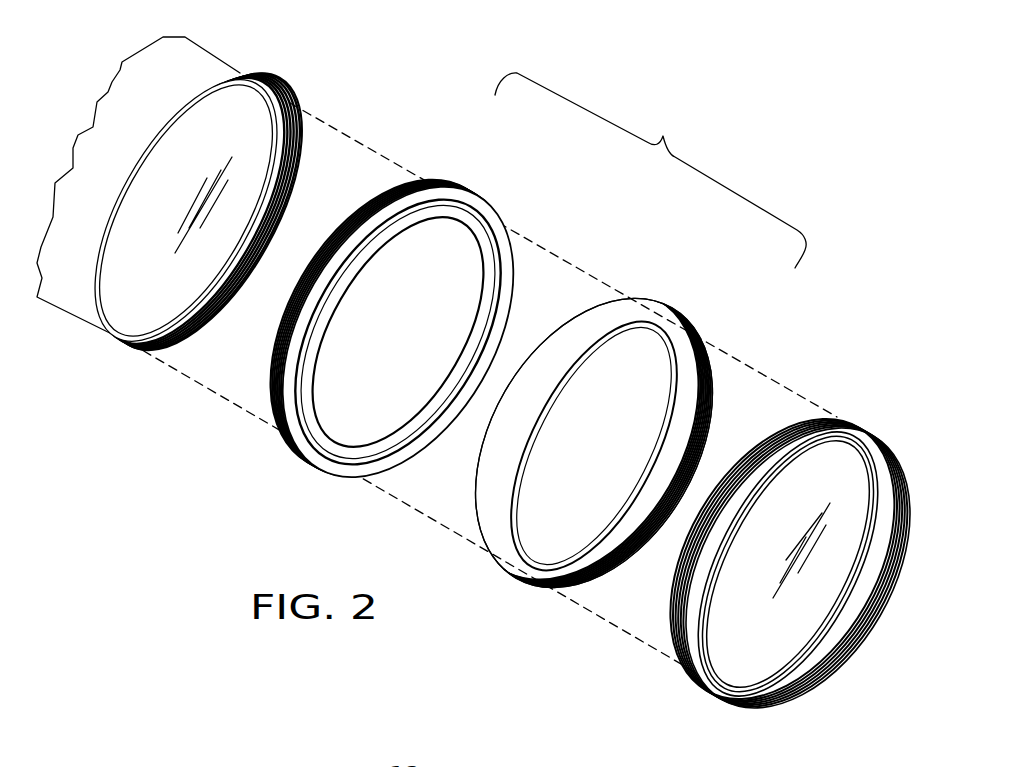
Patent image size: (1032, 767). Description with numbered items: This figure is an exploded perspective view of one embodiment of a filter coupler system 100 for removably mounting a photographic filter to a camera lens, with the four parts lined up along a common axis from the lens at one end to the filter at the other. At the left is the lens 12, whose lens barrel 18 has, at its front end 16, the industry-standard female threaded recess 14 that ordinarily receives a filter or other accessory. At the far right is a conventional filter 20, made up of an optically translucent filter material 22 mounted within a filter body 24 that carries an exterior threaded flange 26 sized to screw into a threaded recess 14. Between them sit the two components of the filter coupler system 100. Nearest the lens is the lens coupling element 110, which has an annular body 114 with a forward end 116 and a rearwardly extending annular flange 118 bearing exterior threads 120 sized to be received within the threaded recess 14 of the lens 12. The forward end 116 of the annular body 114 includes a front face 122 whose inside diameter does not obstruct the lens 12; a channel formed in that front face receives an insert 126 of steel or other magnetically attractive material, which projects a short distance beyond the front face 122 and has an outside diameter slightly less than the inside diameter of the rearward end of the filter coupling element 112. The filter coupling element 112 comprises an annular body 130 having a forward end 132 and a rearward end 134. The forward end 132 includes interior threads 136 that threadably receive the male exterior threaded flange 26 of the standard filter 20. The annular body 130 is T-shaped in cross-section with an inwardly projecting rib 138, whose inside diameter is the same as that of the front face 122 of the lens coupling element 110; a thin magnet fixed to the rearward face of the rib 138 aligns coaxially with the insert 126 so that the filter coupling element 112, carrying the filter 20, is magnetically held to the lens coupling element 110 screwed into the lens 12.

The lens 12 is at (238, 53).
The threaded recess 14 is at (298, 148).
The front end 16 is at (302, 130).
The lens barrel 18 is at (246, 73).
The filter 20 is at (874, 419).
The filter material 22 is at (743, 657).
The filter body 24 is at (710, 680).
The exterior threaded flange 26 is at (684, 657).
The filter coupler system 100 is at (650, 170).
The lens coupling element 110 is at (459, 194).
The filter coupling element 112 is at (661, 301).
The annular body 114 is at (456, 337).
The forward end 116 is at (327, 463).
The annular flange 118 is at (281, 429).
The exterior threads 120 is at (274, 398).
The front face 122 is at (715, 364).
The insert 126 is at (388, 464).
The annular body 130 is at (560, 358).
The forward end 132 is at (470, 556).
The rearward end 134 is at (543, 592).
The interior threads 136 is at (607, 568).
The rib 138 is at (640, 505).